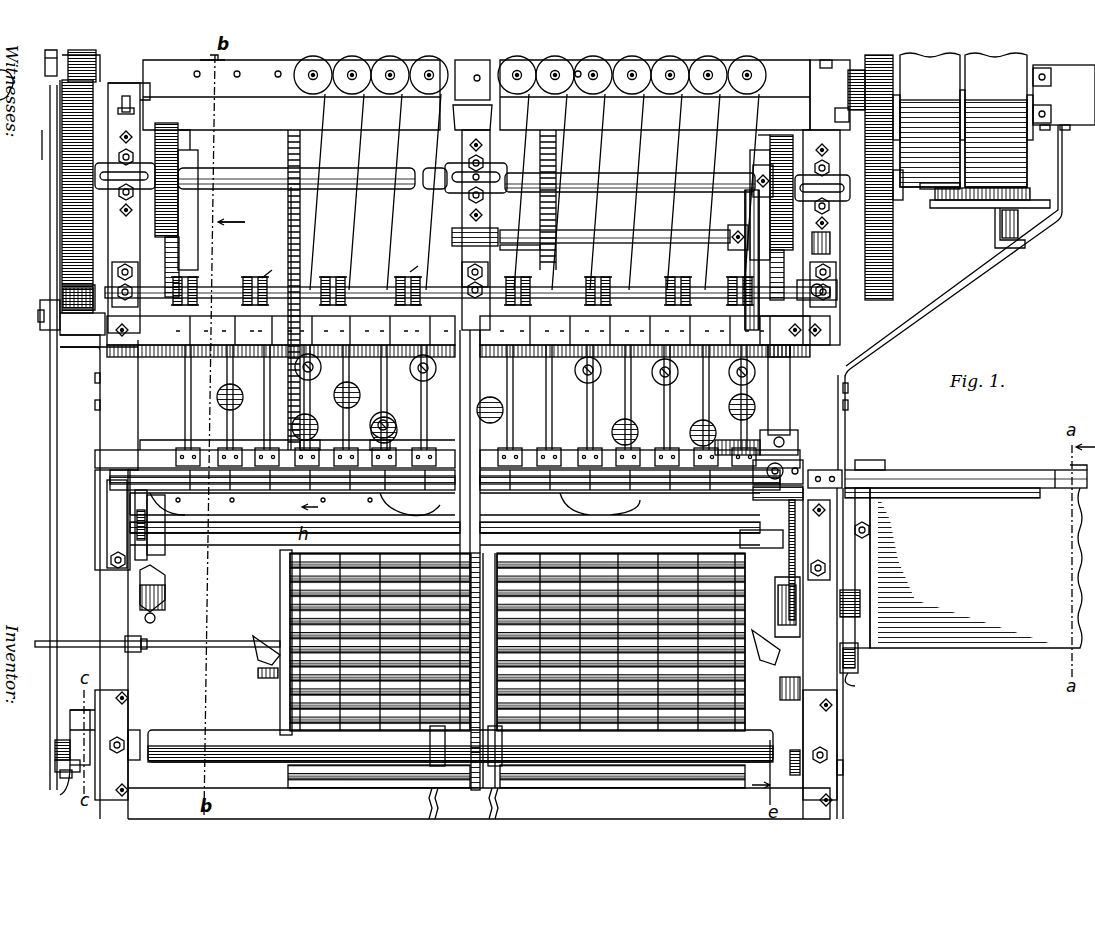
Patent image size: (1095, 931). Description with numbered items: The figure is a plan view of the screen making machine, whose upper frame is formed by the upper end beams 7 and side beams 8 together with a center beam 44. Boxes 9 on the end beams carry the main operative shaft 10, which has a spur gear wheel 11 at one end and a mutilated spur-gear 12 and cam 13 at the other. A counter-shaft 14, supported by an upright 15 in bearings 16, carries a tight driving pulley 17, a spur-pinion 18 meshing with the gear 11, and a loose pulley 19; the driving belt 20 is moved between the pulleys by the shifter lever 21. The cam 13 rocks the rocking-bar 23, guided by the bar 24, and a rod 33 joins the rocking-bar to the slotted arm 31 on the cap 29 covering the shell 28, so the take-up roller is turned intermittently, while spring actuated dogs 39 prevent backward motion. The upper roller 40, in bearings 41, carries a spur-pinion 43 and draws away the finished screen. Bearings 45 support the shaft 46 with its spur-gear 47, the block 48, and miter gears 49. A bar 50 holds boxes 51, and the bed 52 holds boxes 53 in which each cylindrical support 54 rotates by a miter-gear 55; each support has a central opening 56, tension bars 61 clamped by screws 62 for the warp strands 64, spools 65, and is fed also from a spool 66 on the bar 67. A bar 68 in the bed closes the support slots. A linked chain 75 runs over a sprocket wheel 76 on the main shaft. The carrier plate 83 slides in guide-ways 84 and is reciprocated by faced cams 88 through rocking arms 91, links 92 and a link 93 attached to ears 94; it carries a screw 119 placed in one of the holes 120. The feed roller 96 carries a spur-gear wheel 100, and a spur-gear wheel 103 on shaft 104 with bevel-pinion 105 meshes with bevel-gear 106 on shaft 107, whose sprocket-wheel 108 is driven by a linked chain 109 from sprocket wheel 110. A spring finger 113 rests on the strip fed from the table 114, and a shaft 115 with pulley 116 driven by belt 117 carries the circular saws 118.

The upper end beam 7 is at (100, 423).
The upper side beam 8 is at (225, 97).
The box 9 is at (110, 138).
The main operative shaft 10 is at (258, 187).
The spur gear wheel 11 is at (893, 264).
The mutilated spur-gear 12 is at (86, 53).
The cam 13 is at (62, 205).
The counter-shaft 14 is at (852, 70).
The upright 15 is at (1060, 65).
The bearing 16 is at (826, 70).
The tight driving pulley 17 is at (928, 189).
The spur-pinion 18 is at (849, 118).
The loose pulley 19 is at (963, 120).
The driving belt 20 is at (1020, 190).
The shifter lever 21 is at (1000, 238).
The rocking-bar 23 is at (53, 70).
The guide bar 24 is at (40, 312).
The shell 28 is at (70, 719).
The cap 29 is at (68, 785).
The arm 31 is at (58, 770).
The rod 33 is at (50, 481).
The spring actuated dog 39 is at (835, 712).
The roller 40 is at (460, 746).
The bearing 41 is at (128, 725).
The spur-pinion 43 is at (837, 760).
The center beam 44 is at (469, 560).
The bearing 45 is at (124, 262).
The shaft 46 is at (244, 282).
The spur-gear 47 is at (82, 330).
The block 48 is at (62, 294).
The miter gear 49 is at (80, 80).
The bar 50 is at (458, 336).
The box 51 is at (222, 340).
The bed 52 is at (95, 453).
The box 53 is at (175, 450).
The support 54 is at (230, 391).
The miter-gear 55 is at (410, 266).
The central opening 56 is at (310, 356).
The tension bar 61 is at (312, 450).
The screw 62 is at (378, 450).
The warp strand 64 is at (390, 229).
The spool 65 is at (420, 380).
The spool 66 is at (328, 53).
The bar 67 is at (224, 62).
The bar 68 is at (150, 490).
The linked chain 75 is at (286, 228).
The sprocket wheel 76 is at (288, 140).
The plate 83 is at (95, 516).
The guide-way 84 is at (107, 552).
The faced cam 88 is at (178, 140).
The rocking arm 91 is at (160, 604).
The link 92 is at (484, 266).
The link 93 is at (780, 539).
The ear 94 is at (147, 499).
The roller 96 is at (812, 468).
The spur-gear wheel 100 is at (795, 458).
The spur-gear wheel 103 is at (776, 438).
The shaft 104 is at (790, 410).
The bevel-pinion 105 is at (810, 288).
The bevel-gear 106 is at (745, 273).
The shaft 107 is at (650, 210).
The sprocket-wheel 108 is at (552, 225).
The linked chain 109 is at (552, 210).
The sprocket wheel 110 is at (556, 152).
The spring finger 113 is at (870, 498).
The table 114 is at (965, 460).
The shaft 115 is at (157, 651).
The pulley 116 is at (858, 660).
The belt 117 is at (867, 683).
The circular saw 118 is at (255, 672).
The screw 119 is at (445, 517).
The hole 120 is at (292, 505).